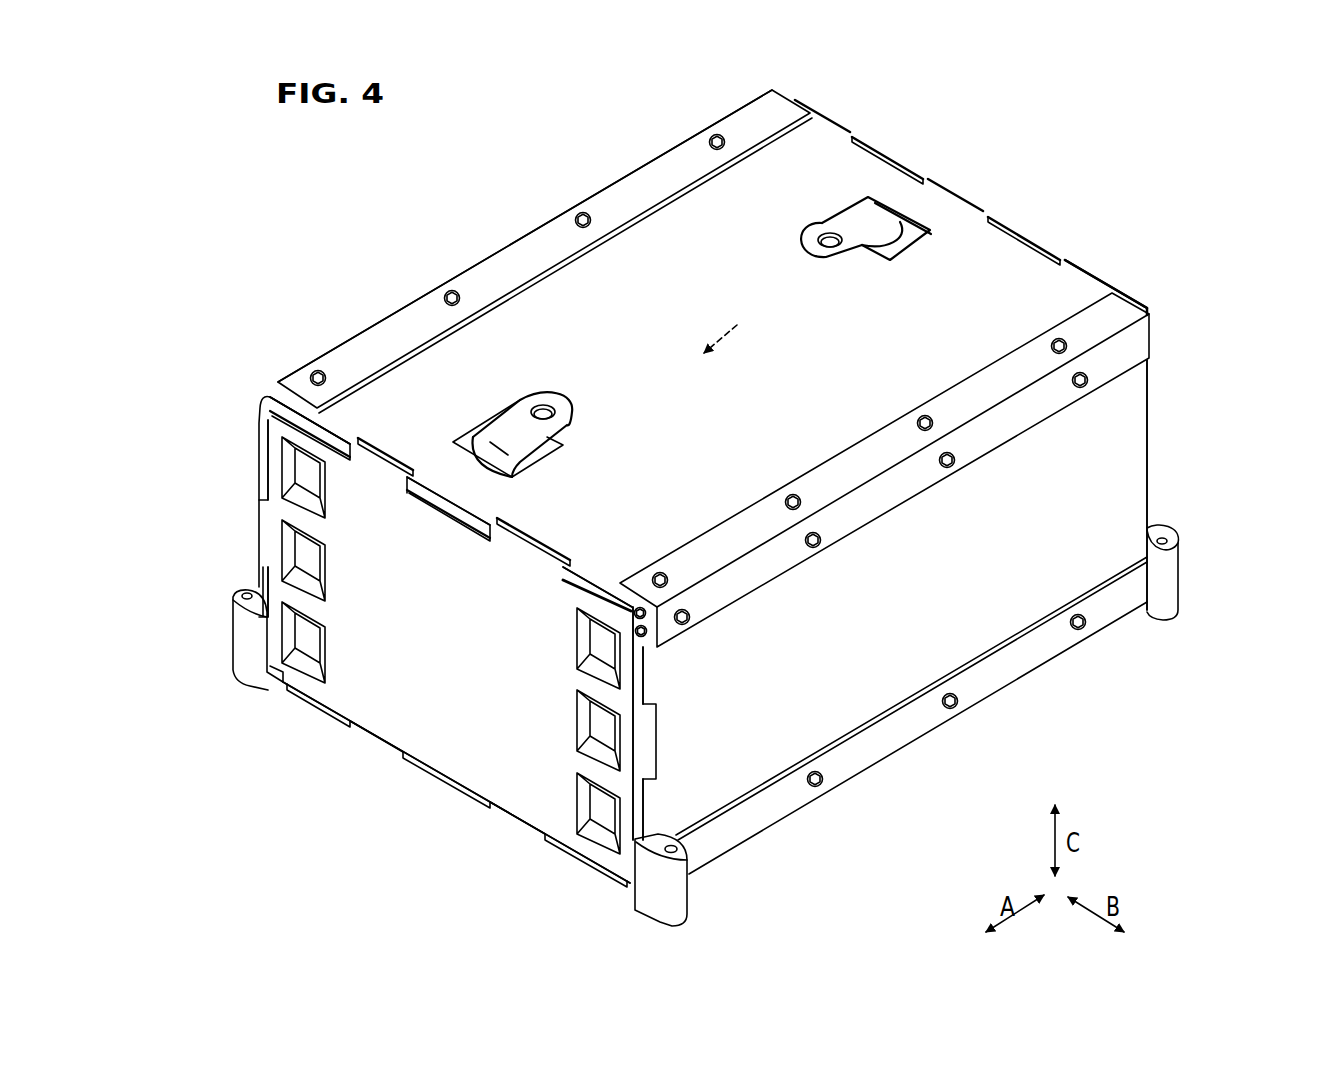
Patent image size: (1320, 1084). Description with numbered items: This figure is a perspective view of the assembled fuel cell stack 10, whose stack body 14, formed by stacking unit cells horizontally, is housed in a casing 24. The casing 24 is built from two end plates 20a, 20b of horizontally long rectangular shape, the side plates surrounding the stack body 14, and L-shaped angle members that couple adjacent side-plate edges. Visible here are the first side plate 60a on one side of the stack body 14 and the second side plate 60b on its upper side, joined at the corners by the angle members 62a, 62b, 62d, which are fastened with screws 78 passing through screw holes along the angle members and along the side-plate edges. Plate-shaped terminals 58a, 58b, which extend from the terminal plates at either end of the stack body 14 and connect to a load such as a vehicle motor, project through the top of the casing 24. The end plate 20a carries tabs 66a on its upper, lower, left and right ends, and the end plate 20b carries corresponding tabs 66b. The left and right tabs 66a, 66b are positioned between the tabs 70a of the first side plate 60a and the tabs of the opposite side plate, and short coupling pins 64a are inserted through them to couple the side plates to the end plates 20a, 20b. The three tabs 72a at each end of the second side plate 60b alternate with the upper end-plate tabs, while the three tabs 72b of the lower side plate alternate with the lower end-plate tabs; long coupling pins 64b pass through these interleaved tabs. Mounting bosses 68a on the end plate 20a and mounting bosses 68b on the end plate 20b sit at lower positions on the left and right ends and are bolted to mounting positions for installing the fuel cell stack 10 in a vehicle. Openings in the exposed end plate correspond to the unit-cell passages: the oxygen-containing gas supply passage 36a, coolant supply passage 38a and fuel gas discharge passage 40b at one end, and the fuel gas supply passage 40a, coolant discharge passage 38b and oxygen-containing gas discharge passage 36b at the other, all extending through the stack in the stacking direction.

The fuel cell stack 10 is at (360, 176).
The stack body 14 is at (740, 330).
The end plate 20a is at (488, 750).
The end plate 20b is at (1074, 250).
The casing 24 is at (498, 250).
The oxygen-containing gas supply passage 36a is at (300, 482).
The oxygen-containing gas discharge passage 36b is at (600, 810).
The coolant supply passage 38a is at (300, 560).
The coolant discharge passage 38b is at (600, 723).
The fuel gas supply passage 40a is at (610, 647).
The fuel gas discharge passage 40b is at (300, 643).
The terminal 58a is at (537, 402).
The terminal 58b is at (822, 228).
The first side plate 60a is at (1117, 463).
The second side plate 60b is at (660, 350).
The angle member 62a is at (888, 450).
The angle member 62b is at (636, 184).
The angle member 62d is at (1019, 661).
The short coupling pin 64a is at (655, 628).
The long coupling pin 64b is at (638, 606).
The tab 66a is at (375, 470).
The tab 66b is at (893, 152).
The mounting boss 68a is at (245, 658).
The mounting boss 68b is at (1171, 587).
The tab 70a is at (647, 675).
The tab 72a is at (837, 125).
The tab 72b is at (317, 708).
The screw 78 is at (583, 213).